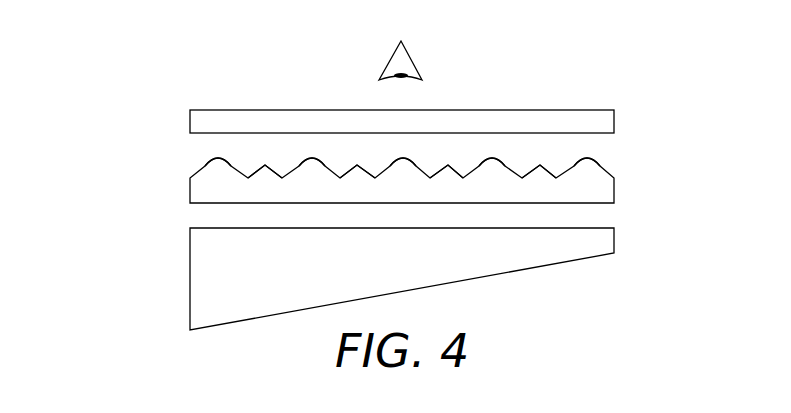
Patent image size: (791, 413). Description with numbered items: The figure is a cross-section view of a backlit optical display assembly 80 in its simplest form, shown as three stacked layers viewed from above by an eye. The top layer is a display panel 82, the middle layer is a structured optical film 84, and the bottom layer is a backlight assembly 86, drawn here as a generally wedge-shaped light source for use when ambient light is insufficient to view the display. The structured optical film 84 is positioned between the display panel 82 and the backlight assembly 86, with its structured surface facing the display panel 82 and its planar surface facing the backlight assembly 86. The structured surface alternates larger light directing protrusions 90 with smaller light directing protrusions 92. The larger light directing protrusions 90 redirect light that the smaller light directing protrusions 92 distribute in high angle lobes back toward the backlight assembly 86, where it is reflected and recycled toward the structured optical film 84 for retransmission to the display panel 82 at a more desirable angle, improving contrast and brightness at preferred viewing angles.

The optical display assembly 80 is at (131, 113).
The display panel 82 is at (606, 121).
The structured optical film 84 is at (604, 188).
The backlight assembly 86 is at (598, 239).
The larger light directing protrusions 90 is at (203, 167).
The smaller light directing protrusions 92 is at (261, 164).